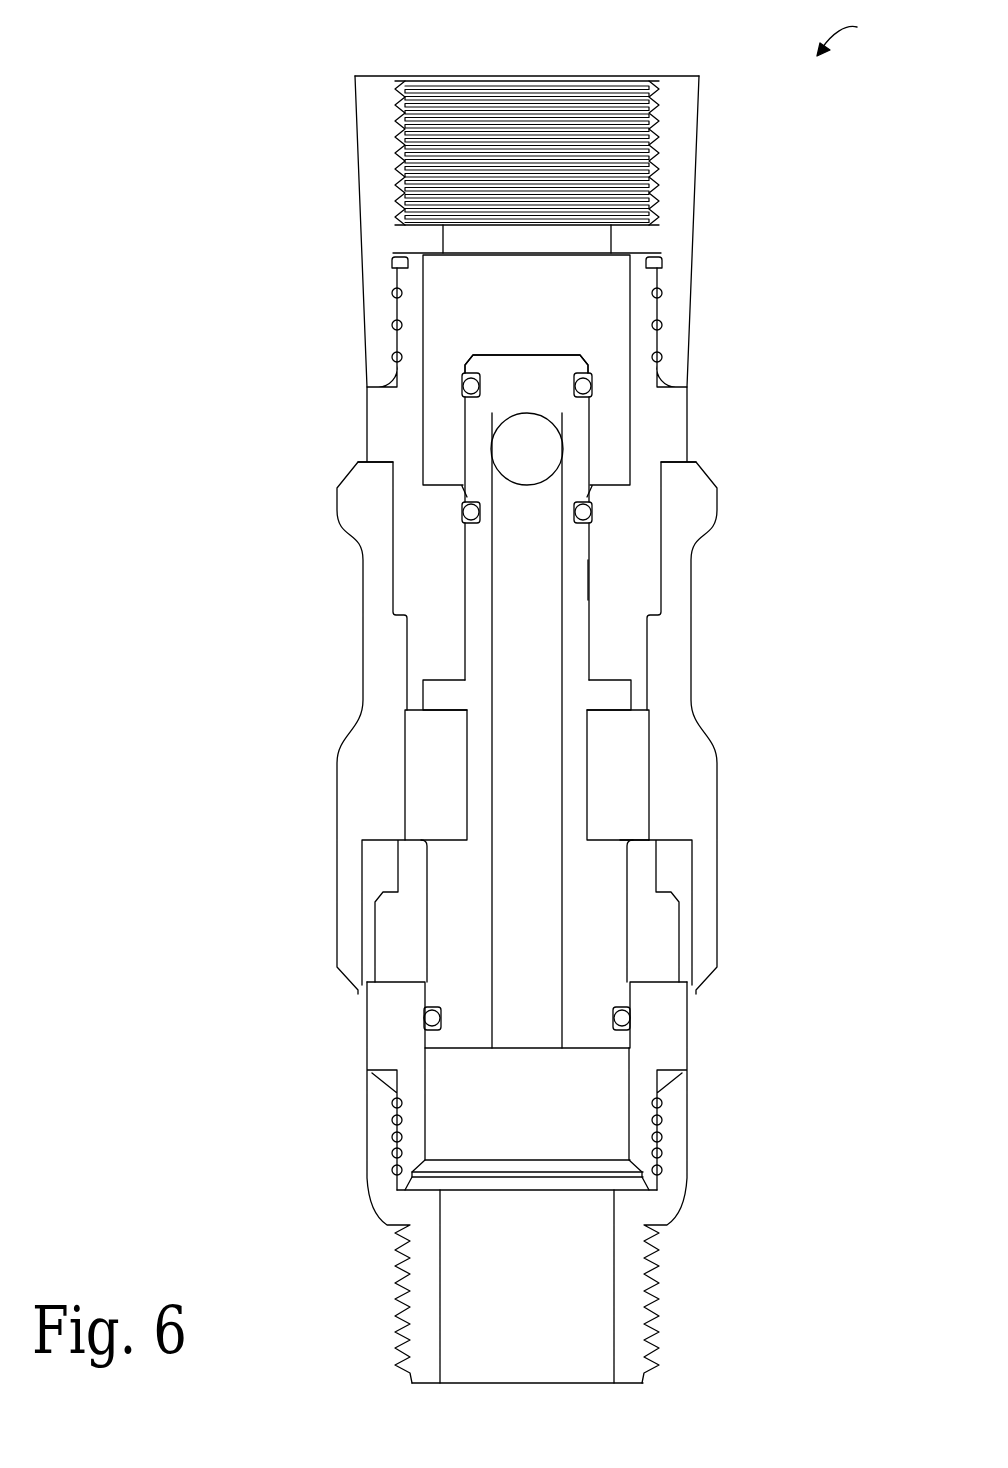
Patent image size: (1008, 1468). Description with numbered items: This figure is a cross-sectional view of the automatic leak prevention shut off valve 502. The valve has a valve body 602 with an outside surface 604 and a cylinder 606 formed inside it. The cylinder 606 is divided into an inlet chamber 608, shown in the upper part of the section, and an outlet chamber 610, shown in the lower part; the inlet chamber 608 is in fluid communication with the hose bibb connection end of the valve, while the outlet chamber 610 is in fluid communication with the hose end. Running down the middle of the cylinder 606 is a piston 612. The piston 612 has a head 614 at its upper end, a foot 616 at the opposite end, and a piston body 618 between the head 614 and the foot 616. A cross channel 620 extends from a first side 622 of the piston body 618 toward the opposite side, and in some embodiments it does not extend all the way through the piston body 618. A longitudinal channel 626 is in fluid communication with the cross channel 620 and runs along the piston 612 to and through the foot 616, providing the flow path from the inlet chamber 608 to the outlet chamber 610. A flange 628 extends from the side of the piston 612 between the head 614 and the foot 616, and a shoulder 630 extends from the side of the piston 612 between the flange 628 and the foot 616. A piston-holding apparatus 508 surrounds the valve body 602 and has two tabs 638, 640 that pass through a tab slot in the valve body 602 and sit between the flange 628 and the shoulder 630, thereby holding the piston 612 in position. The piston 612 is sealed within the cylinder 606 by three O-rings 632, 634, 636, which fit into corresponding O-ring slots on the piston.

The automatic leak prevention shut off valve 502 is at (858, 35).
The piston-holding apparatus 508 is at (721, 776).
The valve body 602 is at (688, 250).
The outside surface 604 is at (690, 326).
The cylinder 606 is at (632, 280).
The inlet chamber 608 is at (511, 311).
The outlet chamber 610 is at (511, 1114).
The piston 612 is at (595, 455).
The head 614 is at (540, 353).
The foot 616 is at (604, 1048).
The piston body 618 is at (596, 580).
The cross channel 620 is at (511, 460).
The first side 622 is at (511, 389).
The longitudinal channel 626 is at (511, 666).
The flange 628 is at (632, 705).
The shoulder 630 is at (627, 842).
The O-ring 632 is at (592, 386).
The O-ring 634 is at (594, 514).
The O-ring 636 is at (633, 1018).
The tab 638 is at (408, 783).
The tab 640 is at (616, 783).